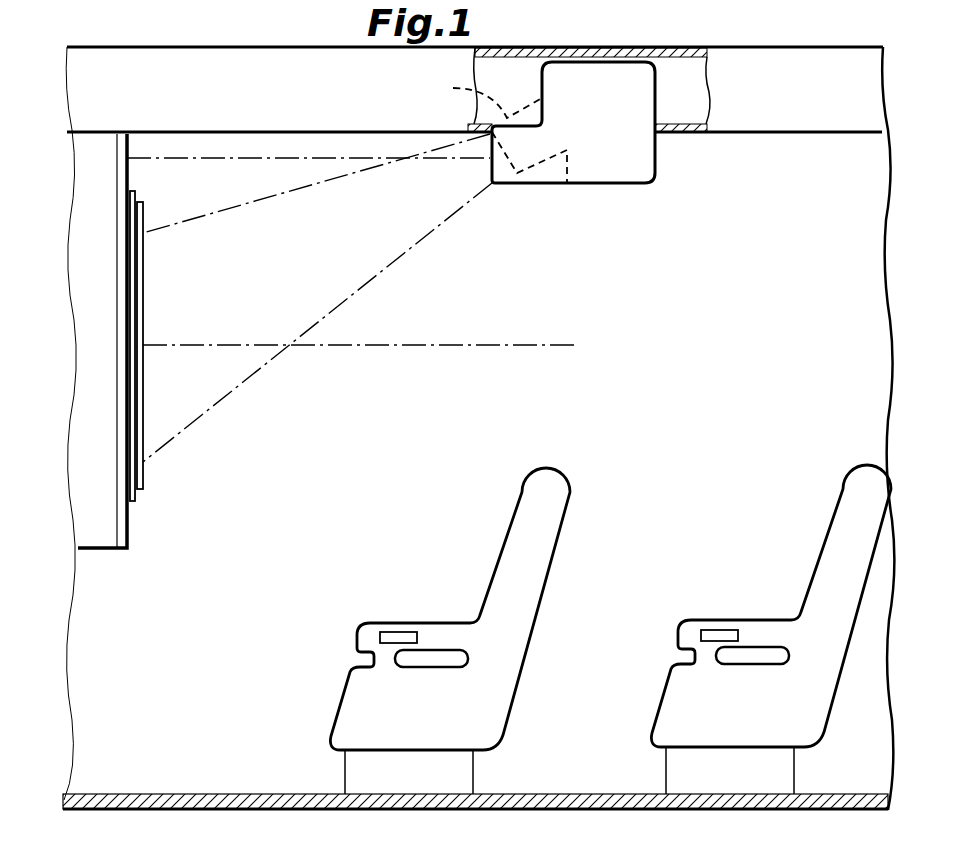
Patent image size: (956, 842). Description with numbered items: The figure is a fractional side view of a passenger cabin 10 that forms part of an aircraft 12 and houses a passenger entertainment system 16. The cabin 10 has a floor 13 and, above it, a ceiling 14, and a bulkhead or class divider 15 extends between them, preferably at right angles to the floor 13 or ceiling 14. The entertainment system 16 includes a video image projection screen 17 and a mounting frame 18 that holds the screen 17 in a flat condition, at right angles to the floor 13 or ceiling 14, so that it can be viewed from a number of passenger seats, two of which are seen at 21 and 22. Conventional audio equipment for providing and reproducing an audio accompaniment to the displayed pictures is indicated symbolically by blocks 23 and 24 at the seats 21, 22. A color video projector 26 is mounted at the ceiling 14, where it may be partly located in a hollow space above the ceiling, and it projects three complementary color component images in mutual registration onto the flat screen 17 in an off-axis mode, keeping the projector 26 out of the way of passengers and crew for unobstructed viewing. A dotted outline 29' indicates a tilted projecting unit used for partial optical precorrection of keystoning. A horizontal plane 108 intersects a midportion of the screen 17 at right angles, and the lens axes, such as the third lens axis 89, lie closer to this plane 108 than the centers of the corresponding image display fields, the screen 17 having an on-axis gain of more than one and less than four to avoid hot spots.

The passenger cabin 10 is at (112, 612).
The aircraft 12 is at (166, 42).
The floor 13 is at (216, 794).
The ceiling 14 is at (814, 134).
The bulkhead or class divider 15 is at (128, 531).
The passenger entertainment system 16 is at (398, 233).
The video image projection screen 17 is at (144, 322).
The mounting frame 18 is at (140, 201).
The seat 21 is at (512, 538).
The seat 22 is at (830, 536).
The audio equipment block 23 is at (398, 632).
The audio equipment block 24 is at (719, 630).
The color video projector 26 is at (621, 142).
The tilted projecting unit 29' is at (478, 98).
The third lens axis 89 is at (320, 158).
The horizontal plane 108 is at (434, 345).